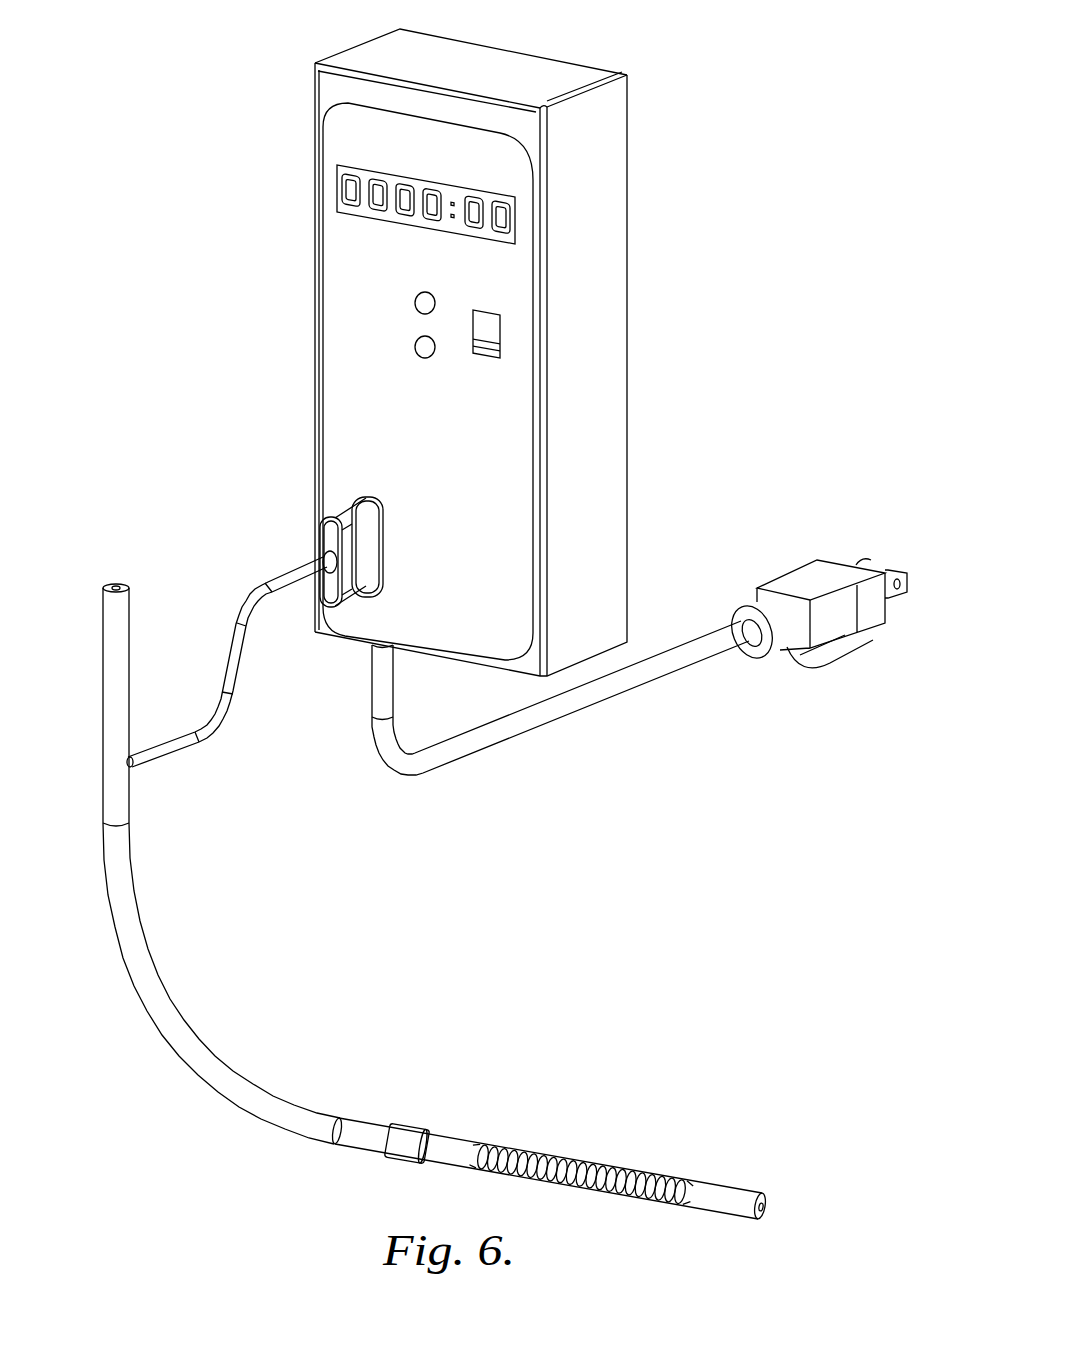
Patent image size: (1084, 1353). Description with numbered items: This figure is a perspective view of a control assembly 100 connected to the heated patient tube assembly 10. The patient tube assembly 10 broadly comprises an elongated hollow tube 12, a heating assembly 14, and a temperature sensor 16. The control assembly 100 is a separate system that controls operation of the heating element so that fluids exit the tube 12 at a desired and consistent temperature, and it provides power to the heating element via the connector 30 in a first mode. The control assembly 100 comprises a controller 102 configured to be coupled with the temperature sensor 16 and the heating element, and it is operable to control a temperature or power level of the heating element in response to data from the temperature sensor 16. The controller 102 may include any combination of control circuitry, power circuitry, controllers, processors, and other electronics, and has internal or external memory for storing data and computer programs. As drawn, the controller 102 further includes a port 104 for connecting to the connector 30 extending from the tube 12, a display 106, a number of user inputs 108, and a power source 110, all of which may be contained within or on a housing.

The heated patient tube assembly 10 is at (185, 500).
The elongated hollow tube 12 is at (192, 1027).
The heating assembly 14 is at (640, 1163).
The temperature sensor 16 is at (410, 1133).
The connector 30 is at (347, 520).
The control assembly 100 is at (648, 400).
The controller 102 is at (340, 370).
The port 104 is at (385, 503).
The display 106 is at (425, 190).
The user inputs 108 is at (408, 318).
The power source 110 is at (620, 685).